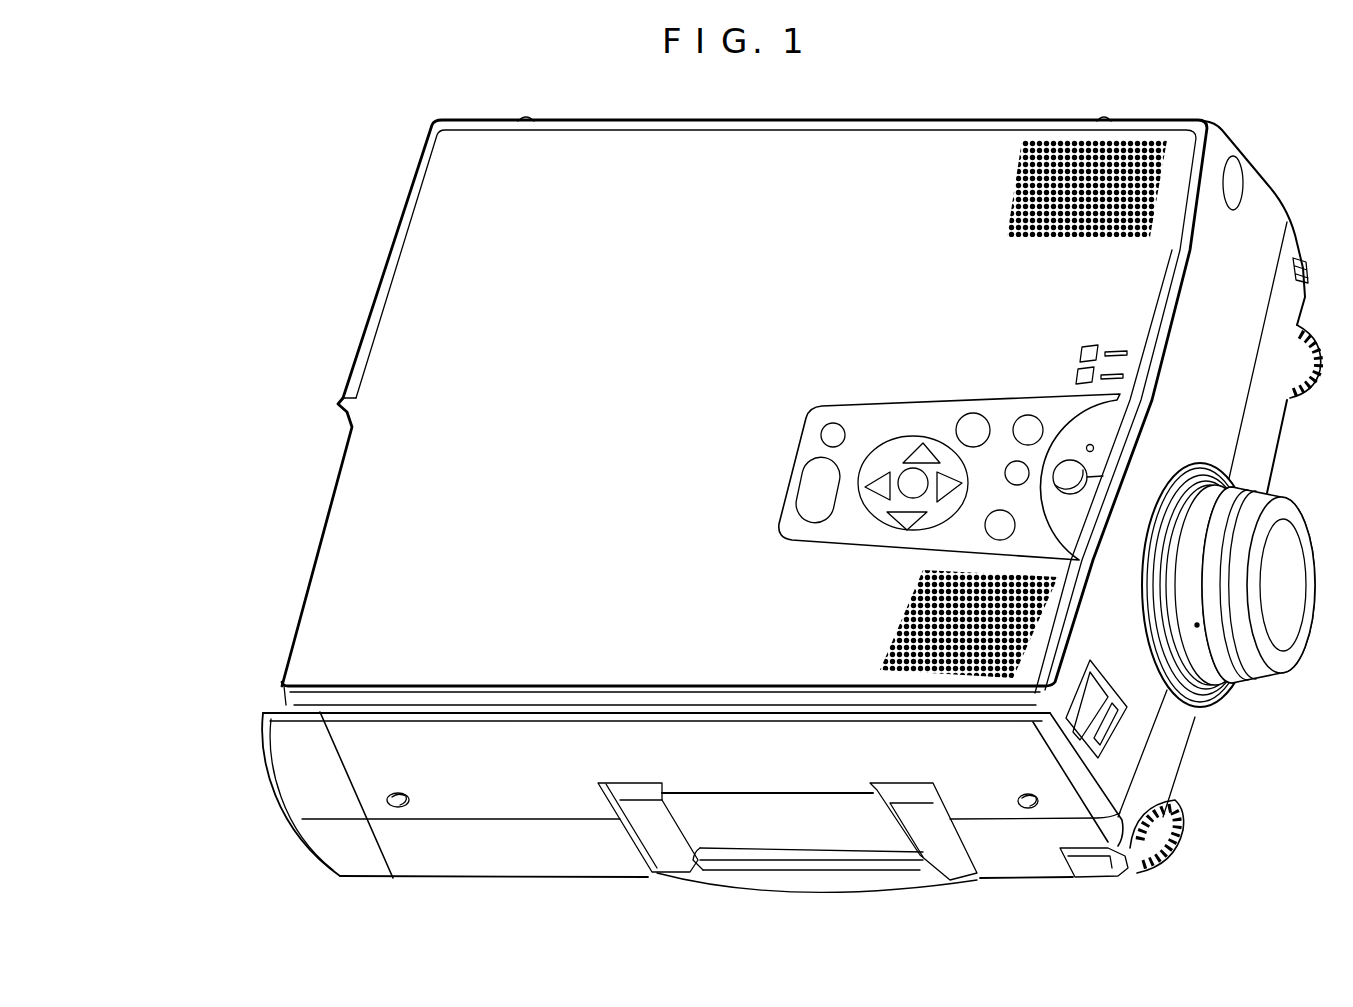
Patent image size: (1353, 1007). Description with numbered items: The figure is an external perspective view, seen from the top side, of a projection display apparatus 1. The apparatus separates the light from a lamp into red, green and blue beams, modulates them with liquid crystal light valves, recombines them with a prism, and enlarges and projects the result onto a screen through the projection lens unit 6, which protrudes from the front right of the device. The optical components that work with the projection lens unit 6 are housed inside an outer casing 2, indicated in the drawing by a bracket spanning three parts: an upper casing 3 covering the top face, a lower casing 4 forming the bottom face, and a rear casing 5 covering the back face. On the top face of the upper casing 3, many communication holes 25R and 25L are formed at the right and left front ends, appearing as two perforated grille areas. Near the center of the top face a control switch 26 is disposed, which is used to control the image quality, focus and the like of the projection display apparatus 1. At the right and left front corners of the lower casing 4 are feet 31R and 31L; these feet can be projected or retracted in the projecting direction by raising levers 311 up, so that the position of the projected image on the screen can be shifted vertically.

The projection display apparatus 1 is at (268, 170).
The outer casing 2 is at (210, 643).
The upper casing 3 is at (308, 653).
The lower casing 4 is at (403, 848).
The rear casing 5 is at (302, 770).
The projection lens unit 6 is at (1292, 650).
The communication holes 25L is at (1058, 155).
The communication holes 25R is at (897, 618).
The control switch 26 is at (897, 455).
The foot 31L is at (1312, 392).
The foot 31R is at (1185, 832).
The levers 311 is at (1305, 258).